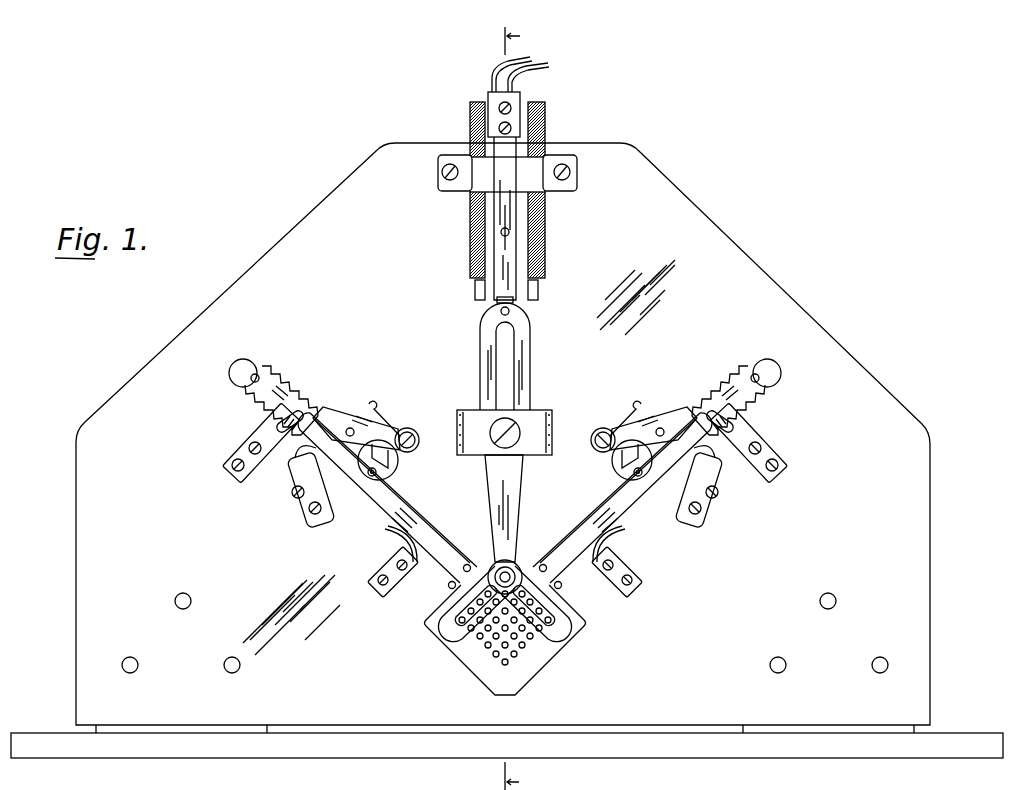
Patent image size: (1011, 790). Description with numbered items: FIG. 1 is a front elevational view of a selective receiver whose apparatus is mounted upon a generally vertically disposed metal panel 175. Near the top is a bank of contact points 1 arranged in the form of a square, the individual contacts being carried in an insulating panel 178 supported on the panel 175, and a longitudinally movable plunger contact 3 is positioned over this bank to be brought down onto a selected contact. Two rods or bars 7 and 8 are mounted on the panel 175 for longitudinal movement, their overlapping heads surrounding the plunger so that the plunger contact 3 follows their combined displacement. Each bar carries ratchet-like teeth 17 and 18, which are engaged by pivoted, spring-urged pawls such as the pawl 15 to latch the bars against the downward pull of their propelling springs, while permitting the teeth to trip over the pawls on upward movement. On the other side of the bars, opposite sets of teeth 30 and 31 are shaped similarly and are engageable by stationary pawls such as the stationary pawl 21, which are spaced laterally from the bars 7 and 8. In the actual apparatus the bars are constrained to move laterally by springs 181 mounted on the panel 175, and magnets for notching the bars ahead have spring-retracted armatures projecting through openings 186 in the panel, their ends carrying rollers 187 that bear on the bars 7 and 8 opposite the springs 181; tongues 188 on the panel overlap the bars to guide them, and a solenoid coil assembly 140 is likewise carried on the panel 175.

The bank of contact points 1 is at (515, 650).
The plunger contact 3 is at (517, 408).
The bar 7 is at (567, 553).
The bar 8 is at (436, 548).
The pawl 15 is at (328, 412).
The teeth 17 is at (713, 400).
The teeth 18 is at (270, 368).
The stationary pawl 21 is at (292, 460).
The opposite set of teeth 30 is at (745, 400).
The opposite set of teeth 31 is at (255, 384).
The solenoid coil assembly 140 is at (546, 230).
The panel 175 is at (822, 330).
The insulating panel 178 is at (472, 659).
The springs 181 is at (394, 531).
The openings 186 is at (392, 478).
The rollers 187 is at (386, 473).
The tongues 188 is at (270, 425).